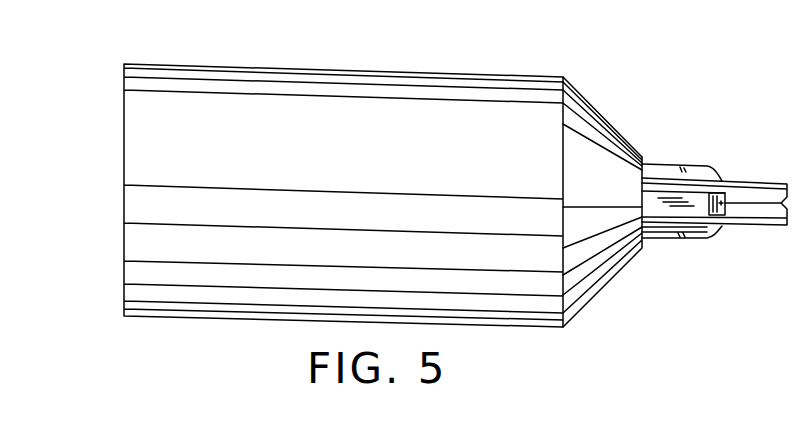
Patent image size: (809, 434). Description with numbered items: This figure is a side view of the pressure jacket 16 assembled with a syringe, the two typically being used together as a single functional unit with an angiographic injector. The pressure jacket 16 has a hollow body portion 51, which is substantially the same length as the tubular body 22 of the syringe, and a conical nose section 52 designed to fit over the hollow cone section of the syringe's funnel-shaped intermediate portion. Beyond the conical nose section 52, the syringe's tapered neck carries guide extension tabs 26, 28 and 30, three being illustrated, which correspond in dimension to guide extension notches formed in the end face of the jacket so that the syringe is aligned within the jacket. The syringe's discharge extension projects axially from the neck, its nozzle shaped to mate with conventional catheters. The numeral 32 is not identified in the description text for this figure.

The pressure jacket 16 is at (374, 67).
The hollow body portion 51 is at (510, 98).
The conical nose section 52 is at (603, 272).
The guide extension tab 26 is at (712, 172).
The guide extension tab 28 is at (727, 202).
The guide extension tab 30 is at (702, 237).
The adjacent figure element 32 is at (4, 432).
The tubular body 22 is at (272, 429).